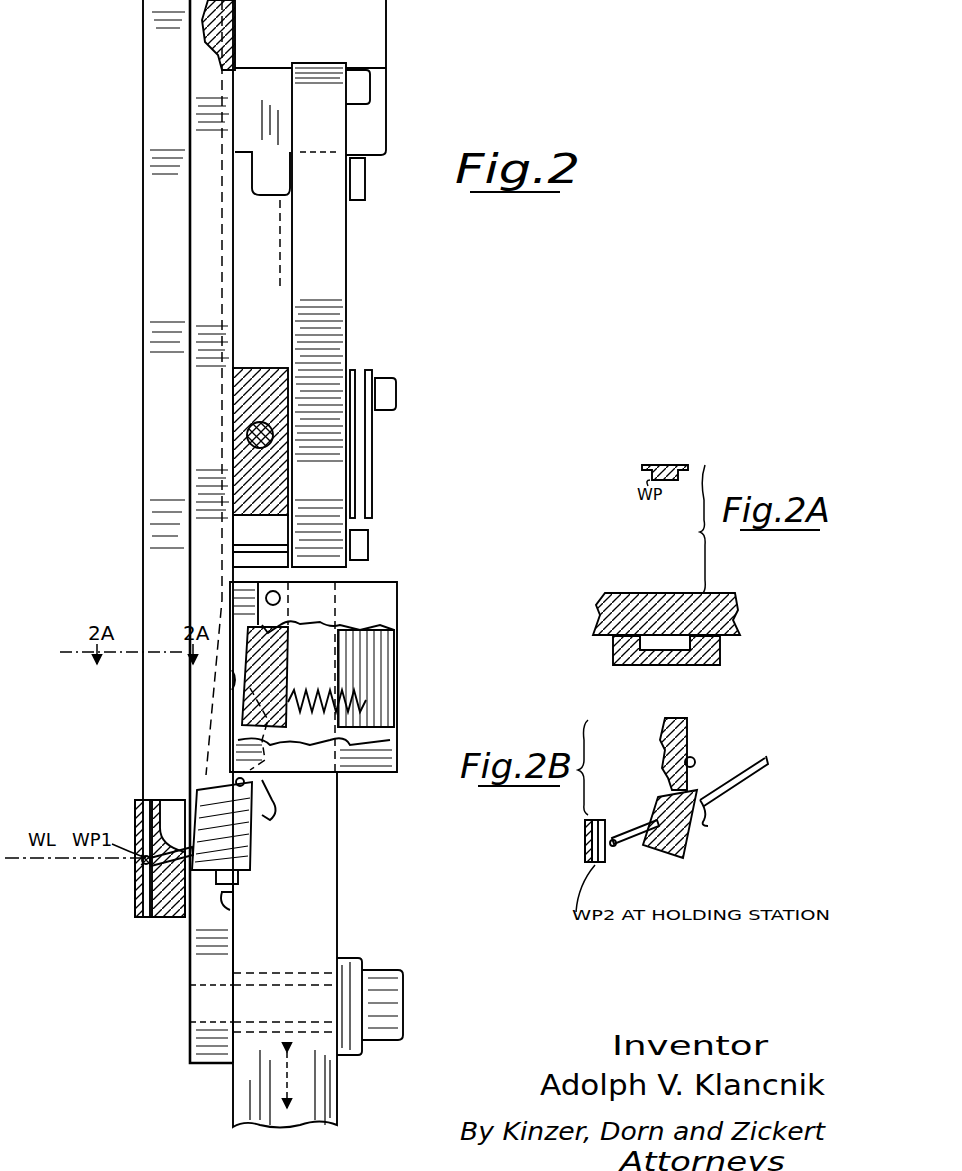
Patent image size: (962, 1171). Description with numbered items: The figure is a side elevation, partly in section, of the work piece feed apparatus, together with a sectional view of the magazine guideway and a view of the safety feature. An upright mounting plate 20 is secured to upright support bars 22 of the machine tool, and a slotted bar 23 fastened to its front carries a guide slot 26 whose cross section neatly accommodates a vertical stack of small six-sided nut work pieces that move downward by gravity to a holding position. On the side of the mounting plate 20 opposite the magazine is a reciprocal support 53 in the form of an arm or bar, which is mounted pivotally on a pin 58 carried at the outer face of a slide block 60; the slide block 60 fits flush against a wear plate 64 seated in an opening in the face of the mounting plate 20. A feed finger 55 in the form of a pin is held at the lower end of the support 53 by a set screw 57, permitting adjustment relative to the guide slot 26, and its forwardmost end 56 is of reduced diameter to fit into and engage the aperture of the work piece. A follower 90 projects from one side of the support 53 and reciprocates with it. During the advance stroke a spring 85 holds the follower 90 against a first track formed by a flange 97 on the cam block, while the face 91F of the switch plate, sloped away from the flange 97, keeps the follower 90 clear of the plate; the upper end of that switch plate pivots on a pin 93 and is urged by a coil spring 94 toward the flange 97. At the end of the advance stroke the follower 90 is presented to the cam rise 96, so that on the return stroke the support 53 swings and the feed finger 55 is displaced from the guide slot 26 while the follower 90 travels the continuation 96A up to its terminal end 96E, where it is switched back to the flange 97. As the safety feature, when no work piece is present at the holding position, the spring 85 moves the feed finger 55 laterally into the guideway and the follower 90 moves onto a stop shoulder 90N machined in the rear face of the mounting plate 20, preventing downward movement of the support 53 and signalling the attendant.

In FIG. 2, the mounting plate 20 is at (207, 211).
In FIG. 2A, the mounting plate 20 is at (648, 596).
In FIG. 2B, the mounting plate 20 is at (660, 730).
In FIG. 2, the upright support bars 22 is at (340, 860).
In FIG. 2, the slotted bar 23 is at (157, 298).
In FIG. 2A, the slotted bar 23 is at (722, 656).
In FIG. 2, the guide slot 26 is at (145, 920).
In FIG. 2A, the guide slot 26 is at (668, 662).
In FIG. 2, the reciprocal support 53 is at (268, 498).
In FIG. 2B, the reciprocal support 53 is at (700, 830).
In FIG. 2, the feed finger 55 is at (165, 920).
In FIG. 2B, the feed finger 55 is at (640, 842).
In FIG. 2, the forwardmost end 56 is at (142, 864).
In FIG. 2B, the forwardmost end 56 is at (614, 848).
In FIG. 2, the set screw 57 is at (230, 910).
In FIG. 2, the pin 58 is at (247, 436).
In FIG. 2, the slide block 60 is at (258, 368).
In FIG. 2, the wear plate 64 is at (242, 52).
In FIG. 2, the spring 85 is at (270, 805).
In FIG. 2B, the spring 85 is at (716, 792).
In FIG. 2, the follower 90 is at (235, 782).
In FIG. 2B, the follower 90 is at (697, 758).
In FIG. 2, the stop shoulder 90N is at (232, 680).
In FIG. 2B, the stop shoulder 90N is at (660, 760).
In FIG. 2, the face of the switch plate 91F is at (250, 661).
In FIG. 2, the pin 93 is at (281, 598).
In FIG. 2, the coil spring 94 is at (332, 706).
In FIG. 2, the cam rise 96 is at (306, 707).
In FIG. 2, the continuation of the cam rise 96A is at (240, 697).
In FIG. 2, the terminal end 96E is at (272, 639).
In FIG. 2, the flange 97 is at (250, 689).